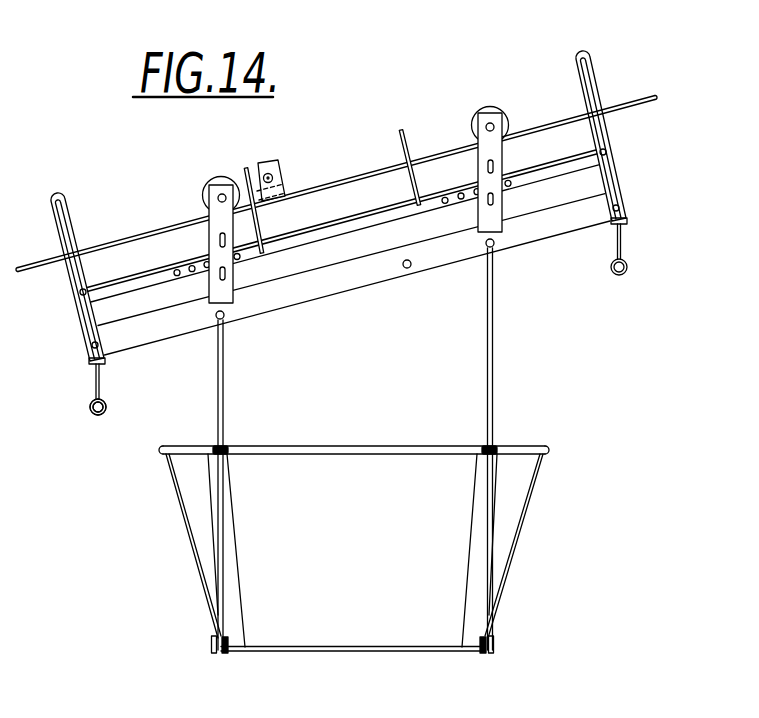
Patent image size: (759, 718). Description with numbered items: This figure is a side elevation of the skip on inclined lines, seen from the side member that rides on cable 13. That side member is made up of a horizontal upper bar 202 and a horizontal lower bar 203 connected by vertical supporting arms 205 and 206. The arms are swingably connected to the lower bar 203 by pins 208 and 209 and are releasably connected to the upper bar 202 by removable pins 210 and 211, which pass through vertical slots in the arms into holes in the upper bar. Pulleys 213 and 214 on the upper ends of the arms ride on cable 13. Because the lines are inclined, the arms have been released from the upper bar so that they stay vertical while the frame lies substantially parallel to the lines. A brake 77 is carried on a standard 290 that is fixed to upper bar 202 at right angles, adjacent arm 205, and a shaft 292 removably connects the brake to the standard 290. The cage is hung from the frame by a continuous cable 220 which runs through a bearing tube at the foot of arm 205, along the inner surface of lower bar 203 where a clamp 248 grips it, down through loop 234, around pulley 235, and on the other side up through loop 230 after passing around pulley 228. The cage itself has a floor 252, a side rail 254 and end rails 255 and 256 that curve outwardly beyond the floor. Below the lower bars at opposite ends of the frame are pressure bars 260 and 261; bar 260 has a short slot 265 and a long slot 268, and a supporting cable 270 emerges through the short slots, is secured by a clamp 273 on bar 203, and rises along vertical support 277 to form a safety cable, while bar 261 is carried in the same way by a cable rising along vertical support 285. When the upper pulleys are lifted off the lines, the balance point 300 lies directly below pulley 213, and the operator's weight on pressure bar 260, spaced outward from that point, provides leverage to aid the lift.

The cable 13 is at (650, 97).
The brake 77 is at (294, 159).
The upper bar 202 is at (431, 208).
The lower bar 203 is at (345, 284).
The vertical supporting arm 205 is at (209, 208).
The vertical supporting arm 206 is at (499, 118).
The pin 208 is at (224, 318).
The pin 209 is at (495, 249).
The removable pin 210 is at (221, 262).
The removable pin 211 is at (494, 188).
The pulley 213 is at (206, 195).
The pulley 214 is at (477, 116).
The continuous cable 220 is at (228, 384).
The pulley 228 is at (211, 640).
The loop 230 is at (229, 446).
The loop 234 is at (496, 446).
The pulley 235 is at (494, 643).
The clamp 248 is at (410, 269).
The floor 252 is at (384, 651).
The side rail 254 is at (395, 445).
The end rail 255 is at (164, 454).
The end rail 256 is at (546, 454).
The pressure bar 260 is at (106, 408).
The pressure bar 261 is at (612, 274).
The short slot 265 is at (95, 399).
The long slot 268 is at (97, 416).
The supporting cable 270 is at (104, 378).
The clamp 273 is at (88, 360).
The vertical support 277 is at (70, 262).
The vertical support 285 is at (625, 76).
The standard 290 is at (246, 168).
The shaft 292 is at (292, 134).
The balance point 300 is at (226, 653).